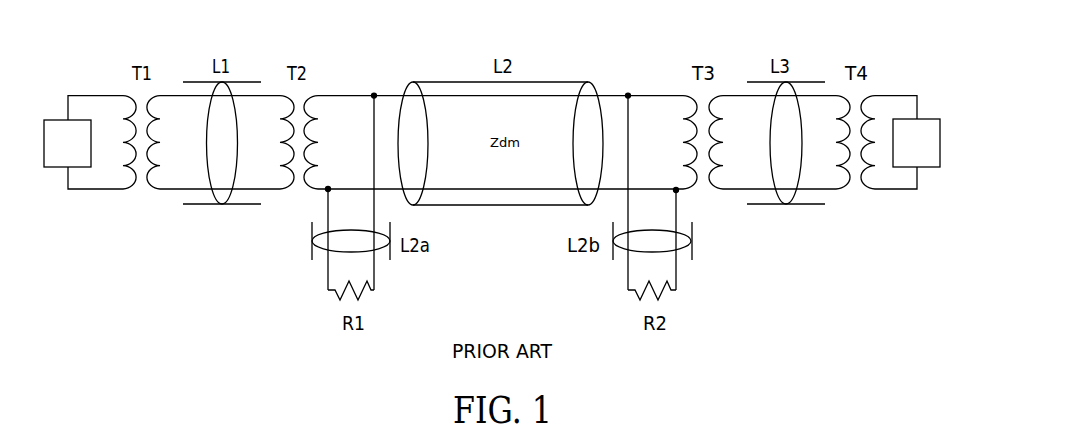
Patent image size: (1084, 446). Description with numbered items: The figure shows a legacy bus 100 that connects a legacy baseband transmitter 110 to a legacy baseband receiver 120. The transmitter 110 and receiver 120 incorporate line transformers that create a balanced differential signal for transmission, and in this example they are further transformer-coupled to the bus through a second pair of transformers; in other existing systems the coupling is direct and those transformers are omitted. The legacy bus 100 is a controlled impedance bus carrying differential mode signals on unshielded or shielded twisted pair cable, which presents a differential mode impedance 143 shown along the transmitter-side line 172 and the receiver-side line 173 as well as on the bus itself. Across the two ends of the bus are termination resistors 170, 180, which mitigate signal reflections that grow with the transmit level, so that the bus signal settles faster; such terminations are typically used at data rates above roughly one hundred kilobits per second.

The legacy bus 100 is at (652, 93).
The legacy baseband transmitter 110 is at (56, 119).
The legacy baseband receiver 120 is at (928, 118).
The differential mode impedance (Zdm) 143 is at (213, 237).
The termination resistor 170 is at (335, 295).
The line L1 172 is at (248, 80).
The line L3 173 is at (747, 78).
The termination resistor 180 is at (673, 297).